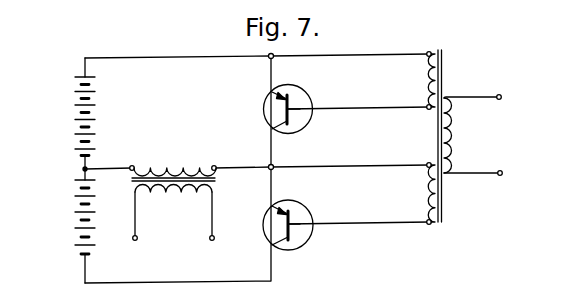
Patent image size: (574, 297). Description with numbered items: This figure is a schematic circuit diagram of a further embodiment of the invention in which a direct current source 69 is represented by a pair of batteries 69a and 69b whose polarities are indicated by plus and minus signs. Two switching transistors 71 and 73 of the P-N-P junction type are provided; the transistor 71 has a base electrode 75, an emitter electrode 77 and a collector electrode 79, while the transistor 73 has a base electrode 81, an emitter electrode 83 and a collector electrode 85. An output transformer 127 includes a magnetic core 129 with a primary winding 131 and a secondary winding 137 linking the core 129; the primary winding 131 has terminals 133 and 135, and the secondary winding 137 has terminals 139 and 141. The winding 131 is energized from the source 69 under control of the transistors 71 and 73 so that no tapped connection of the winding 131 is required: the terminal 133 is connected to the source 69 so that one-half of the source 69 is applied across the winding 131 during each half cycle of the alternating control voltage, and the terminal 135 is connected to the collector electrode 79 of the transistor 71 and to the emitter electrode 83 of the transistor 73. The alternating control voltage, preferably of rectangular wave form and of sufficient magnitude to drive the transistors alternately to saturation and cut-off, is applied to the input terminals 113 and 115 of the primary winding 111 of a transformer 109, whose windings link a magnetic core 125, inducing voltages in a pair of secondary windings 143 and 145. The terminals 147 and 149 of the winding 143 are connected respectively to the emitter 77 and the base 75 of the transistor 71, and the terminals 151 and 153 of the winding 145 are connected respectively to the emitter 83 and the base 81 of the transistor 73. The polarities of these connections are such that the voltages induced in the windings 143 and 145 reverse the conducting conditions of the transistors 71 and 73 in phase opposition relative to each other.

The direct current source 69 is at (45, 178).
The battery 69a is at (96, 134).
The battery 69b is at (96, 241).
The switching transistor 71 is at (308, 94).
The switching transistor 73 is at (311, 211).
The base electrode 75 is at (306, 122).
The emitter electrode 77 is at (273, 90).
The collector electrode 79 is at (285, 131).
The base electrode 81 is at (305, 240).
The emitter electrode 83 is at (273, 205).
The collector electrode 85 is at (283, 247).
The transformer 109 is at (517, 143).
The primary winding 111 is at (452, 120).
The input terminal 113 is at (502, 97).
The input terminal 115 is at (503, 173).
The magnetic core 125 is at (442, 190).
The output transformer 127 is at (210, 159).
The magnetic core 129 is at (216, 179).
The primary winding 131 is at (157, 162).
The terminal 133 is at (132, 166).
The terminal 135 is at (217, 167).
The secondary winding 137 is at (173, 210).
The terminal 139 is at (137, 238).
The terminal 141 is at (212, 241).
The secondary winding 143 is at (428, 78).
The secondary winding 145 is at (428, 193).
The terminal 147 is at (427, 51).
The terminal 149 is at (427, 108).
The terminal 151 is at (427, 163).
The terminal 153 is at (427, 224).